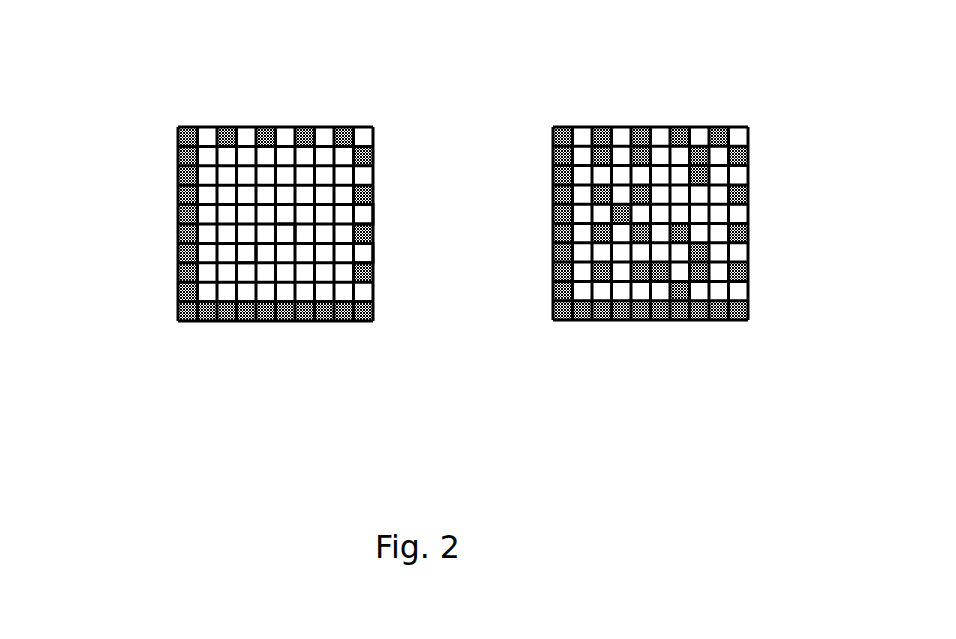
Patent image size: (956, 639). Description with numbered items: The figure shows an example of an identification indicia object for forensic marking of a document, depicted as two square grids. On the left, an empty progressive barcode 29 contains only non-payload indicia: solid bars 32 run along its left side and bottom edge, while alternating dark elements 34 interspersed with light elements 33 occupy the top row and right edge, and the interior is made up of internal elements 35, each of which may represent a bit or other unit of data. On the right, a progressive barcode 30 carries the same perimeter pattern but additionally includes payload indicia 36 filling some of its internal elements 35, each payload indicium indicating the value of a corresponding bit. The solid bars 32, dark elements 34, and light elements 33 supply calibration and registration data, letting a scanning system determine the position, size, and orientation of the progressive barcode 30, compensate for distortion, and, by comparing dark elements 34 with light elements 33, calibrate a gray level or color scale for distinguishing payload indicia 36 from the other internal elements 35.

The empty progressive barcode 29 is at (318, 83).
The progressive barcode 30 is at (628, 83).
The solid bars 32 is at (238, 321).
The light elements 33 is at (373, 250).
The dark elements 34 is at (373, 185).
The internal elements 35 is at (283, 232).
The payload indicia 36 is at (652, 213).